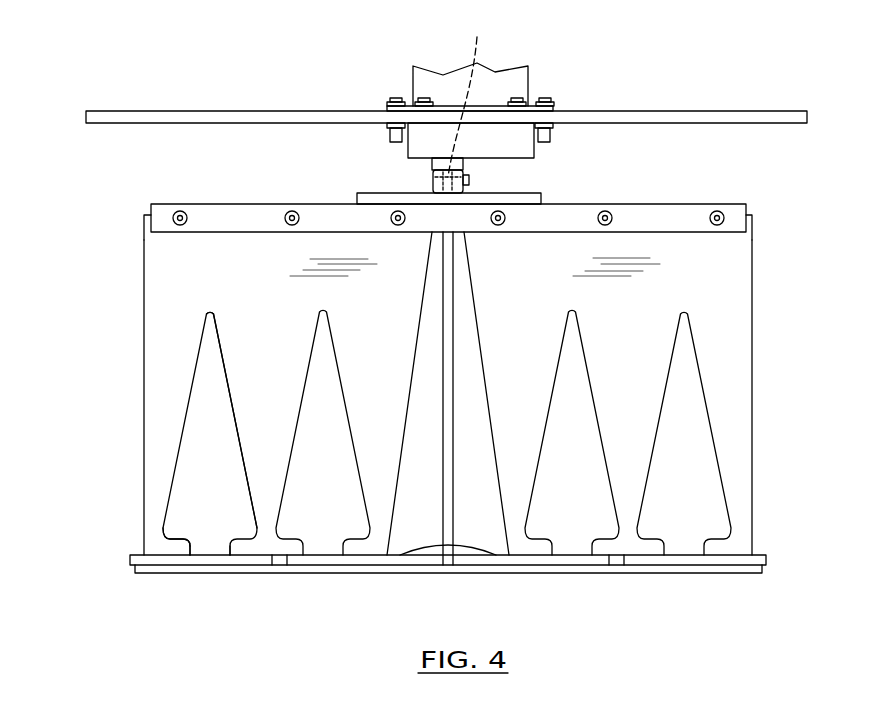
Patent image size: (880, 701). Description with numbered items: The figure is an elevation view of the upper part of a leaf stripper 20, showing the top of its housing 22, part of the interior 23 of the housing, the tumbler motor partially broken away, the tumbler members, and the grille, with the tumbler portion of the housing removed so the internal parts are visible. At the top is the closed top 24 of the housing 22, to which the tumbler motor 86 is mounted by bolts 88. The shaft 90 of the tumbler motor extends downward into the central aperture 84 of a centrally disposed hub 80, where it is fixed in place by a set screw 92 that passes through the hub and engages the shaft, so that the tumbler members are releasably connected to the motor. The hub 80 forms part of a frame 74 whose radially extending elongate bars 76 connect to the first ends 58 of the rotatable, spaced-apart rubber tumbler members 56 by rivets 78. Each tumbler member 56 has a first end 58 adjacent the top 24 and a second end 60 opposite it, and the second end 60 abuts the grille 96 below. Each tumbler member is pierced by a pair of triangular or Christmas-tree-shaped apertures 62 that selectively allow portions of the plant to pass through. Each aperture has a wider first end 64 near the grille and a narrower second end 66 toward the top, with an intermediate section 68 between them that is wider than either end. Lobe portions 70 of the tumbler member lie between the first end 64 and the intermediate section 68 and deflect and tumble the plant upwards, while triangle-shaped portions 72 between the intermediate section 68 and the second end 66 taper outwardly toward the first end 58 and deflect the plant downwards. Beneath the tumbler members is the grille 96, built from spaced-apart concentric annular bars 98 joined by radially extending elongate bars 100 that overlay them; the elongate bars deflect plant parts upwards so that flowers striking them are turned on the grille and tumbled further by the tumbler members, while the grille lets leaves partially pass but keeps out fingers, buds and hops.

The leaf stripper 20 is at (718, 83).
The housing 22 is at (68, 90).
The interior 23 is at (123, 172).
The top 24 is at (177, 110).
The tumbler members 56 is at (137, 302).
The first end 58 is at (143, 218).
The second end 60 is at (137, 553).
The apertures 62 is at (195, 430).
The first ends 64 is at (206, 548).
The second ends 66 is at (212, 308).
The intermediate sections 68 is at (172, 528).
The lobe portions 70 is at (240, 548).
The triangle-shaped portions 72 is at (232, 348).
The frame 74 is at (560, 177).
The bars 76 is at (230, 213).
The rivets 78 is at (178, 212).
The hub 80 is at (370, 192).
The central aperture 84 is at (433, 173).
The tumbler motor 86 is at (422, 82).
The bolts 88 is at (545, 100).
The shaft 90 is at (467, 94).
The set screw 92 is at (470, 182).
The grille 96 is at (767, 560).
The annular bars 98 is at (752, 567).
The elongate bars 100 is at (758, 555).